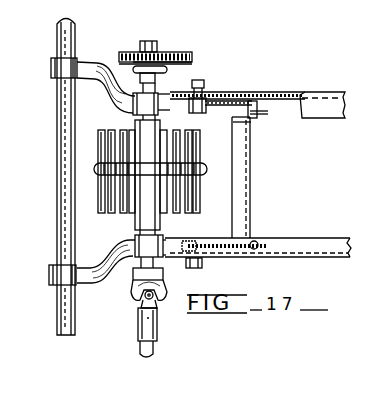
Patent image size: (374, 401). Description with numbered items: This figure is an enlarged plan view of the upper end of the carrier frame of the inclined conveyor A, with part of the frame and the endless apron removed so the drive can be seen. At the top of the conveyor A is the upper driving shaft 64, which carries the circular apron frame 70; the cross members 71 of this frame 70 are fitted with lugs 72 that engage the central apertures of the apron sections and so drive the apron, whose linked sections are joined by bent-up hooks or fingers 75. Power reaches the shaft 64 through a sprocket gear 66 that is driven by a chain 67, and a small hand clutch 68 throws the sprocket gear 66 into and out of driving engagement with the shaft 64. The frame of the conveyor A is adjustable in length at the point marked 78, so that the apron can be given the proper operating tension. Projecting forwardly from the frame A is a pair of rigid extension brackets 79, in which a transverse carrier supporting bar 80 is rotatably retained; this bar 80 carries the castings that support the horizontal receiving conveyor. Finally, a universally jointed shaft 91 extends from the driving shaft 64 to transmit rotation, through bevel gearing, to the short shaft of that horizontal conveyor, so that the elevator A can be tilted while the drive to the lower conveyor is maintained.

The upper driving shaft 64 is at (147, 42).
The sprocket gear 66 is at (170, 51).
The chain 67 is at (193, 62).
The hand clutch 68 is at (186, 70).
The circular apron frame 70 is at (160, 182).
The cross members 71 is at (199, 143).
The lugs 72 is at (201, 169).
The hooks or fingers 75 is at (373, 170).
The length adjustment 78 is at (232, 95).
The extension brackets 79 is at (111, 84).
The carrier supporting bar 80 is at (67, 113).
The universally jointed shaft 91 is at (156, 347).
The inclined conveyor A is at (314, 98).